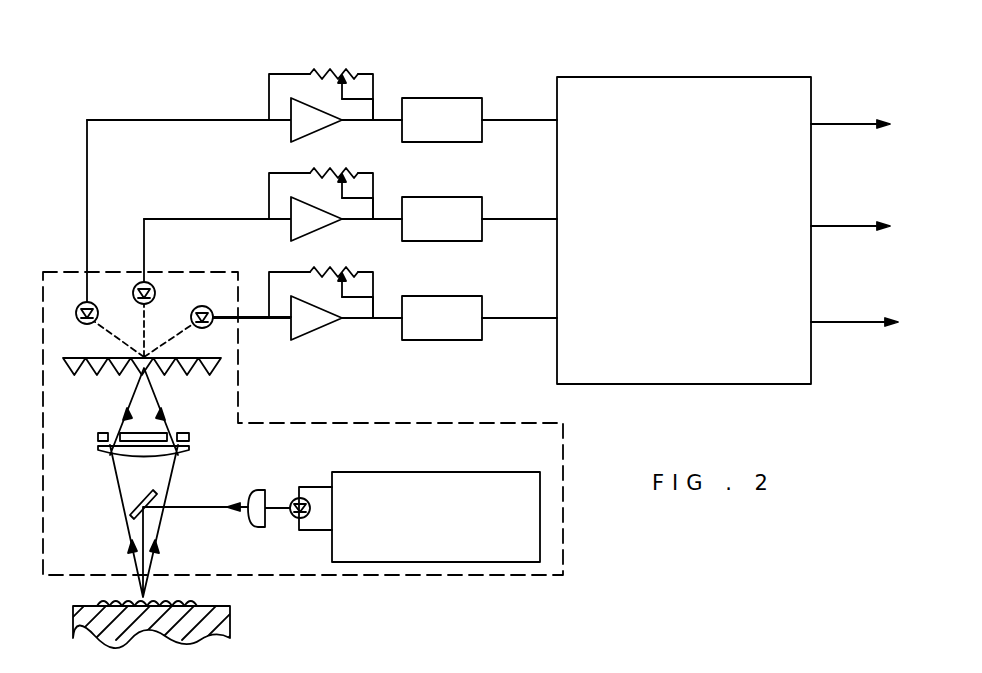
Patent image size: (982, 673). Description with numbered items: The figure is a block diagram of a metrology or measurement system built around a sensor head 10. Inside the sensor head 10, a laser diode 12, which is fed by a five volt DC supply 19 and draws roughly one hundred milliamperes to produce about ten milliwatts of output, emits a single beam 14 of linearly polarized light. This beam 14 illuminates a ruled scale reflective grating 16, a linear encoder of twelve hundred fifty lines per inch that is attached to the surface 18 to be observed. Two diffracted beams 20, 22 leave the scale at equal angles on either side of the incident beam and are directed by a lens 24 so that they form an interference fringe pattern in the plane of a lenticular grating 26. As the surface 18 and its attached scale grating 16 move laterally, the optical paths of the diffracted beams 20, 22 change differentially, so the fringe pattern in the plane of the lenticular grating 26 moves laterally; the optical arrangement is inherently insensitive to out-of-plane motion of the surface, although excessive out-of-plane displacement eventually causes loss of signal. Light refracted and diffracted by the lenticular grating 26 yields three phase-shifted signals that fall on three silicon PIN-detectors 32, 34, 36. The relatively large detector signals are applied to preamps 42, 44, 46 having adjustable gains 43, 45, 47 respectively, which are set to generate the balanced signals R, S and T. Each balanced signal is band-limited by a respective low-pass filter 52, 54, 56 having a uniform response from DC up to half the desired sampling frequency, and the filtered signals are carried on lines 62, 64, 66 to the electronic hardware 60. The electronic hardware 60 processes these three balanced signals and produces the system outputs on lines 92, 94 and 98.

The sensor head 10 is at (407, 578).
The laser diode 12 is at (296, 498).
The beam 14 is at (210, 507).
The ruled scale reflective grating 16 is at (96, 601).
The surface 18 is at (232, 606).
The 5 VDC supply 19 is at (367, 472).
The first diffracted beam 20 is at (111, 508).
The second diffracted beam 22 is at (162, 528).
The lens 24 is at (100, 453).
The lenticular grating 26 is at (70, 373).
The first silicon PIN-detector 32 is at (77, 306).
The second silicon PIN-detector 34 is at (133, 297).
The third silicon PIN-detector 36 is at (192, 310).
The first preamp 42 is at (289, 141).
The first adjustable gain 43 is at (343, 72).
The second preamp 44 is at (289, 239).
The second adjustable gain 45 is at (344, 174).
The third preamp 46 is at (291, 336).
The third adjustable gain 47 is at (344, 273).
The first low-pass filter 52 is at (434, 99).
The second low-pass filter 54 is at (435, 197).
The third low-pass filter 56 is at (435, 296).
The electronic hardware 60 is at (678, 77).
The first signal line 62 is at (506, 120).
The second signal line 64 is at (496, 219).
The third signal line 66 is at (529, 318).
The first output line 92 is at (829, 124).
The second output line 94 is at (825, 226).
The third output line 98 is at (825, 322).